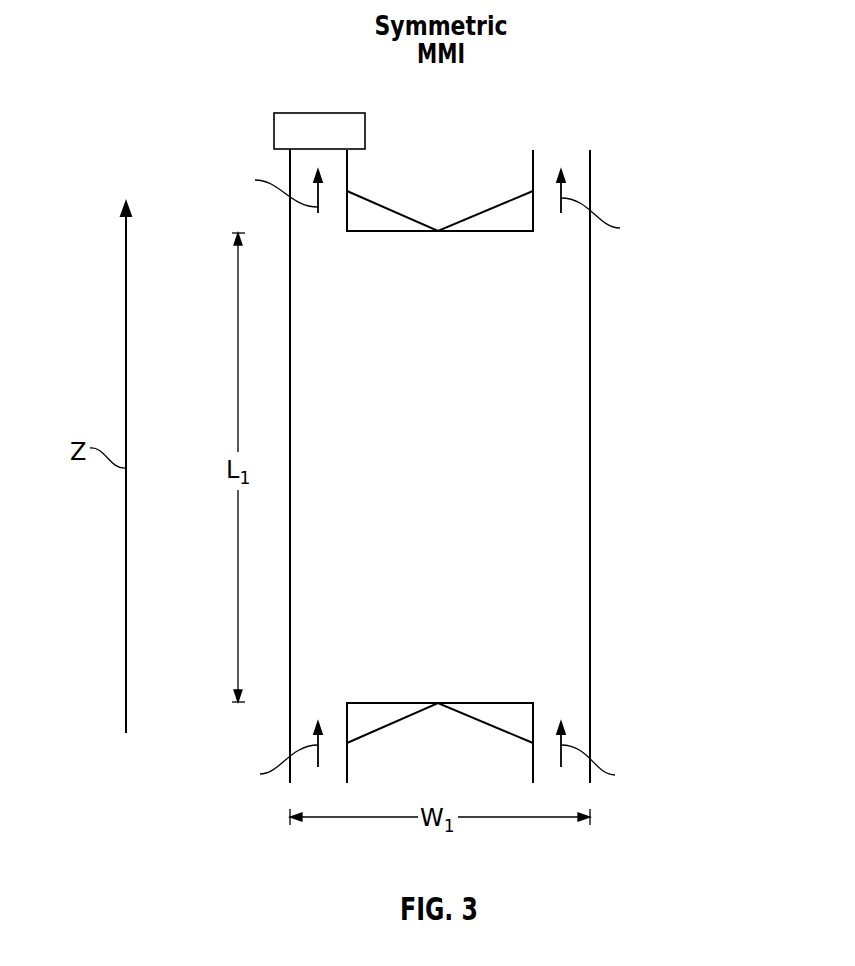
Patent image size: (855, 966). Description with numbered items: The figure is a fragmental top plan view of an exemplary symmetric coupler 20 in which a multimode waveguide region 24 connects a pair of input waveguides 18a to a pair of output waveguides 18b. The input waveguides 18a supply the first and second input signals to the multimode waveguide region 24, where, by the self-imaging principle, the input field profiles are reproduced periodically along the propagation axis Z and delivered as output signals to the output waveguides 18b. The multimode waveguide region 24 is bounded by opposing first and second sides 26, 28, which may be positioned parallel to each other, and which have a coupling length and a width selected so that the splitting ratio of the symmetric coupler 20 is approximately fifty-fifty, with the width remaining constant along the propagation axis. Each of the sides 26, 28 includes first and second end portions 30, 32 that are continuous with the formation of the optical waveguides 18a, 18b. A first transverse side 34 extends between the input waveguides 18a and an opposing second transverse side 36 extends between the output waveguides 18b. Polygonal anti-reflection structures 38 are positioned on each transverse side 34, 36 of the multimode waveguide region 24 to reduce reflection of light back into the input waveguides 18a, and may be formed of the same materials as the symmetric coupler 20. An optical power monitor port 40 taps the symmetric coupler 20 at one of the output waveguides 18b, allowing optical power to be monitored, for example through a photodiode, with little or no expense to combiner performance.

The input waveguides 18a is at (290, 748).
The output waveguides 18b is at (290, 163).
The symmetric coupler 20 is at (465, 441).
The multimode waveguide region 24 is at (465, 467).
The first side 26 is at (290, 452).
The second side 28 is at (590, 466).
The first end portion 30 is at (291, 683).
The second end portion 32 is at (291, 250).
The first transverse side 34 is at (410, 228).
The second transverse side 36 is at (465, 705).
The anti-reflection structures 38 is at (368, 215).
The optical power monitor port 40 is at (335, 146).